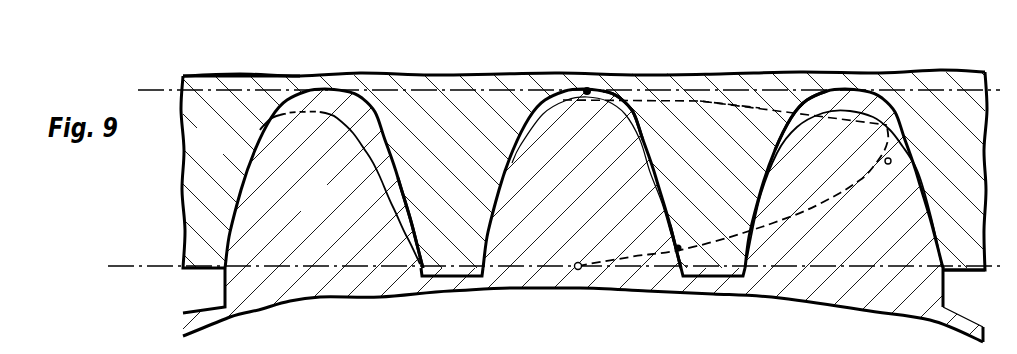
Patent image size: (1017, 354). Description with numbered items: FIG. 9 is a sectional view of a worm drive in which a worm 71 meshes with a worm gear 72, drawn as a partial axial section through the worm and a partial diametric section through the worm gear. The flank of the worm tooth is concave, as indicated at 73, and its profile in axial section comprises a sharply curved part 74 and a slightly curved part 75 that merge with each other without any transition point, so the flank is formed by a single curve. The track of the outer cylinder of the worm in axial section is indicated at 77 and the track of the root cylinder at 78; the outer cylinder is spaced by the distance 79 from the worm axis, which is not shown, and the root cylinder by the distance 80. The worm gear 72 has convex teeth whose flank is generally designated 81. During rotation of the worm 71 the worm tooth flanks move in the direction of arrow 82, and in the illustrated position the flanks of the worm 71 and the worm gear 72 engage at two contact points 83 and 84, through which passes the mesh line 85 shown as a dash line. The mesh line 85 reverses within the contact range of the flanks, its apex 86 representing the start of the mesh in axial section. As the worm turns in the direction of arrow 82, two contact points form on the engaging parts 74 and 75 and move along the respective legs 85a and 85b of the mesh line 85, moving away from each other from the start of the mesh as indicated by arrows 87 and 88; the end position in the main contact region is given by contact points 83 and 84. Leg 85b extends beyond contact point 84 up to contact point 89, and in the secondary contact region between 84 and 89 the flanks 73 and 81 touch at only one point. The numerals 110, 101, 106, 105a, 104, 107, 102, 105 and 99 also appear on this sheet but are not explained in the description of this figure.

The worm 71 is at (221, 152).
The worm gear 72 is at (331, 209).
The concave worm tooth flank 73 is at (388, 158).
The sharply curved part 74 is at (620, 97).
The slightly curved part 75 is at (678, 247).
The track of outer cylinder 77 is at (917, 272).
The track of root cylinder 78 is at (231, 88).
The distance of outer cylinder from worm axis 79 is at (123, 259).
The distance of root cylinder from worm axis 80 is at (152, 83).
The worm gear tooth flank 81 is at (421, 266).
The arrow of worm rotation direction 82 is at (530, 63).
The contact point 83 is at (587, 90).
The contact point 84 is at (687, 256).
The mesh line 85 is at (713, 101).
The leg of mesh line 85a is at (731, 103).
The leg of mesh line 85b is at (787, 224).
The apex of mesh line 86 is at (888, 158).
The arrow 87 is at (628, 132).
The arrow 88 is at (790, 110).
The contact point 89 is at (575, 270).
The displaced tooth profile 110 is at (291, 118).
The element 101 is at (323, 346).
The element 106 is at (362, 346).
The element 105a is at (412, 346).
The element 104 is at (460, 346).
The element 107 is at (520, 346).
The element 102 is at (578, 346).
The element 105 is at (682, 346).
The element 99 is at (845, 346).